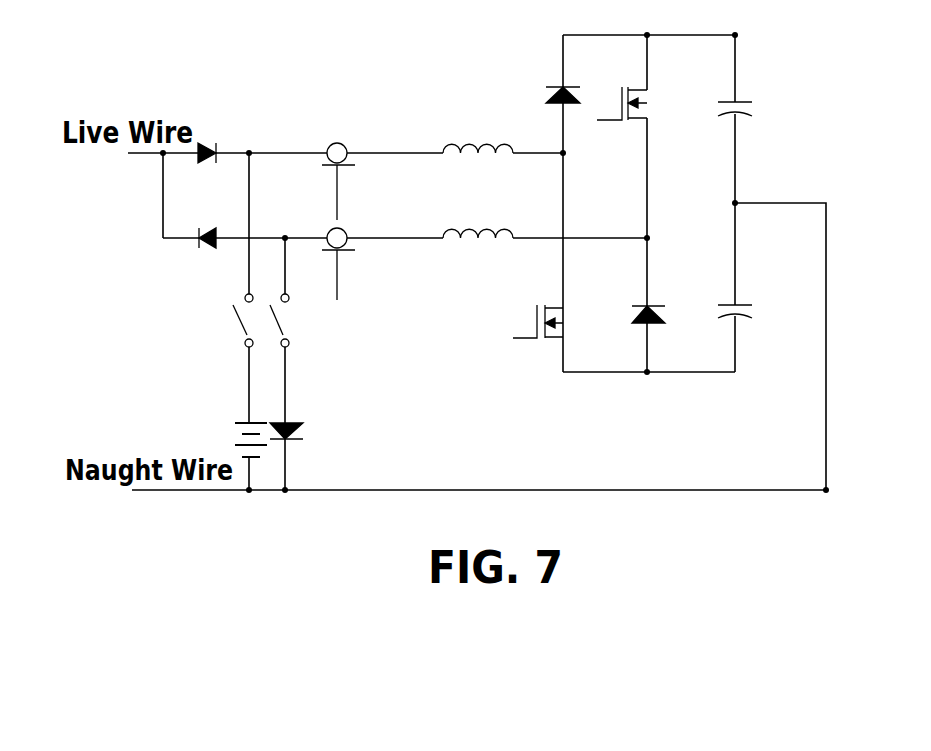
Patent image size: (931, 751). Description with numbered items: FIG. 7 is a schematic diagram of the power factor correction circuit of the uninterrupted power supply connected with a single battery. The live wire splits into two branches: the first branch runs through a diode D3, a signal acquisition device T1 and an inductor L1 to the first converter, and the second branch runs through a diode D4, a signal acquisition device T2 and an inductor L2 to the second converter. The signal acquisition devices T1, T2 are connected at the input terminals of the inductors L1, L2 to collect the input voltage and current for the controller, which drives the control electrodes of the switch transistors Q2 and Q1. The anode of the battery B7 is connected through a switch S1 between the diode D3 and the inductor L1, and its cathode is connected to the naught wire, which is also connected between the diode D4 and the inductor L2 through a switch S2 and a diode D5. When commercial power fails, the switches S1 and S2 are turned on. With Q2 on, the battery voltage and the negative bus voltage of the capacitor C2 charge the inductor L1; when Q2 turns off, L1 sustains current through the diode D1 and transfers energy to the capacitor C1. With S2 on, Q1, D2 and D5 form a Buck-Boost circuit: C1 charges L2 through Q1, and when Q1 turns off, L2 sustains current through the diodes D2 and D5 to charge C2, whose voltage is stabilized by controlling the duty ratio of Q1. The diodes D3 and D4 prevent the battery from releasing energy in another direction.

The diode D3 is at (206, 170).
The diode D4 is at (206, 255).
The signal acquisition device T1 is at (329, 181).
The signal acquisition device T2 is at (329, 264).
The inductor L1 is at (478, 166).
The inductor L2 is at (478, 254).
The diode D1 is at (548, 84).
The switch transistor Q1 is at (622, 93).
The capacitor C1 is at (748, 120).
The switch transistor Q2 is at (537, 309).
The diode D2 is at (637, 302).
The capacitor C2 is at (743, 323).
The switch S1 is at (229, 320).
The switch S2 is at (291, 320).
The battery B7 is at (238, 440).
The diode D5 is at (303, 433).